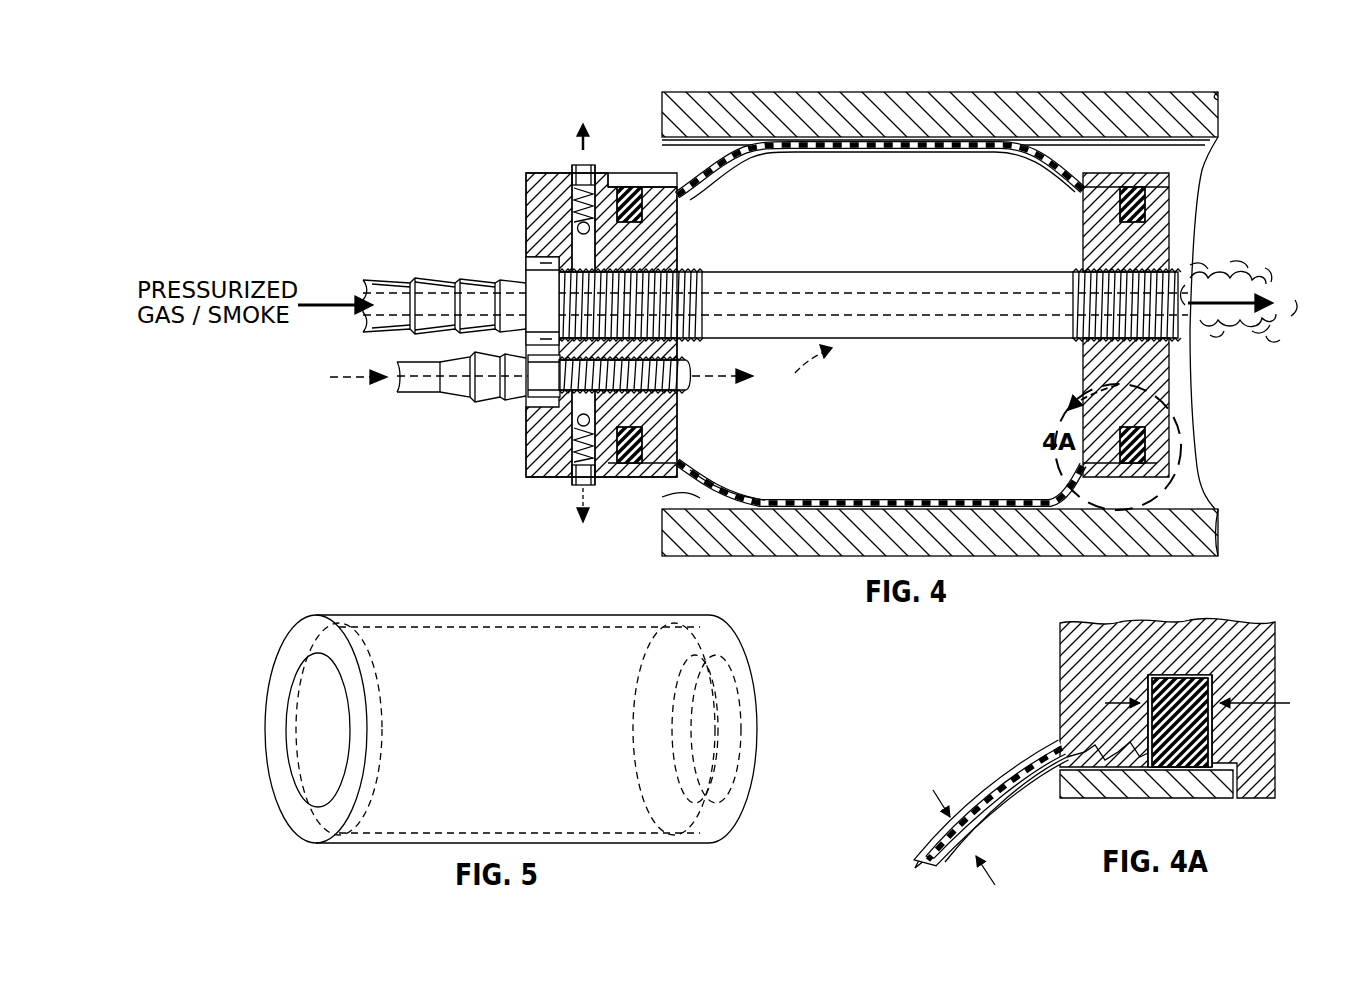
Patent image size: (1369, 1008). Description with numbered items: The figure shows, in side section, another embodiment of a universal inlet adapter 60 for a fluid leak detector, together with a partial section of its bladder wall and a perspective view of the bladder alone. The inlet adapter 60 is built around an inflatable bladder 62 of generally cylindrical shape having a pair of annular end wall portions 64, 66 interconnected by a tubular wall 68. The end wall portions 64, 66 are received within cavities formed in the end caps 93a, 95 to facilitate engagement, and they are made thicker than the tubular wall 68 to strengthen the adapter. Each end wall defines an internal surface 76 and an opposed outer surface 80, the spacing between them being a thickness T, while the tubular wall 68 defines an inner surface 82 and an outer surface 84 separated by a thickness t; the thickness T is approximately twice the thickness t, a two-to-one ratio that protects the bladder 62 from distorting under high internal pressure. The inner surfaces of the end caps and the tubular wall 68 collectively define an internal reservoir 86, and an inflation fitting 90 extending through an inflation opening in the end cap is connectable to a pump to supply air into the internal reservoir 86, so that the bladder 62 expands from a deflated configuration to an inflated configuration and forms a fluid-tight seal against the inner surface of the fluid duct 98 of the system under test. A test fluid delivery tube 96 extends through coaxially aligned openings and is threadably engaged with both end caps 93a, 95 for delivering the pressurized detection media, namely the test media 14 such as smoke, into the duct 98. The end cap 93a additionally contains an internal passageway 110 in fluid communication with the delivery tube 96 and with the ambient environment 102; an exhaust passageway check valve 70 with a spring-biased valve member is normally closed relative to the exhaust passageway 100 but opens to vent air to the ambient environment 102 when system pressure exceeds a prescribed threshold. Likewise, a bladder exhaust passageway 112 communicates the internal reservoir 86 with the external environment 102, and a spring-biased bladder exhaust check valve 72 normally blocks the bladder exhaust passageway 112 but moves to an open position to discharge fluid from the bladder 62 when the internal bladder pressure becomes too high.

In FIG. 4, the test media 14 is at (1300, 282).
In FIG. 4, the universal inlet adapter 60 is at (555, 108).
In FIG. 5, the inflatable bladder 62 is at (265, 642).
In FIG. 5, the end wall portion 64 is at (262, 764).
In FIG. 5, the end wall portion 66 is at (752, 772).
In FIG. 4A, the end wall portion 66 is at (1238, 670).
In FIG. 4, the tubular wall 68 is at (882, 490).
In FIG. 5, the tubular wall 68 is at (460, 612).
In FIG. 4, the exhaust passageway check valve 70 is at (563, 150).
In FIG. 4, the bladder exhaust check valve 72 is at (563, 488).
In FIG. 4A, the internal surface 76 is at (1150, 724).
In FIG. 5, the outer surface 80 is at (748, 672).
In FIG. 4A, the outer surface 80 is at (1215, 726).
In FIG. 4, the inner surface 82 is at (724, 486).
In FIG. 4A, the inner surface 82 is at (1043, 762).
In FIG. 4, the outer surface 84 is at (695, 495).
In FIG. 4A, the outer surface 84 is at (1013, 820).
In FIG. 4, the internal reservoir 86 is at (903, 171).
In FIG. 4, the inflation fitting 90 is at (490, 386).
In FIG. 4, the end cap 93a is at (526, 186).
In FIG. 4, the end cap 95 is at (1160, 417).
In FIG. 4, the test fluid delivery tube 96 is at (935, 338).
In FIG. 4, the fluid duct 98 is at (1208, 96).
In FIG. 4, the exhaust passageway 100 is at (790, 205).
In FIG. 4, the ambient environment 102 is at (648, 71).
In FIG. 4, the internal passageway 110 is at (573, 236).
In FIG. 4, the bladder exhaust passageway 112 is at (580, 407).
In FIG. 4A, the thickness T is at (1206, 704).
In FIG. 4A, the thickness t is at (956, 830).